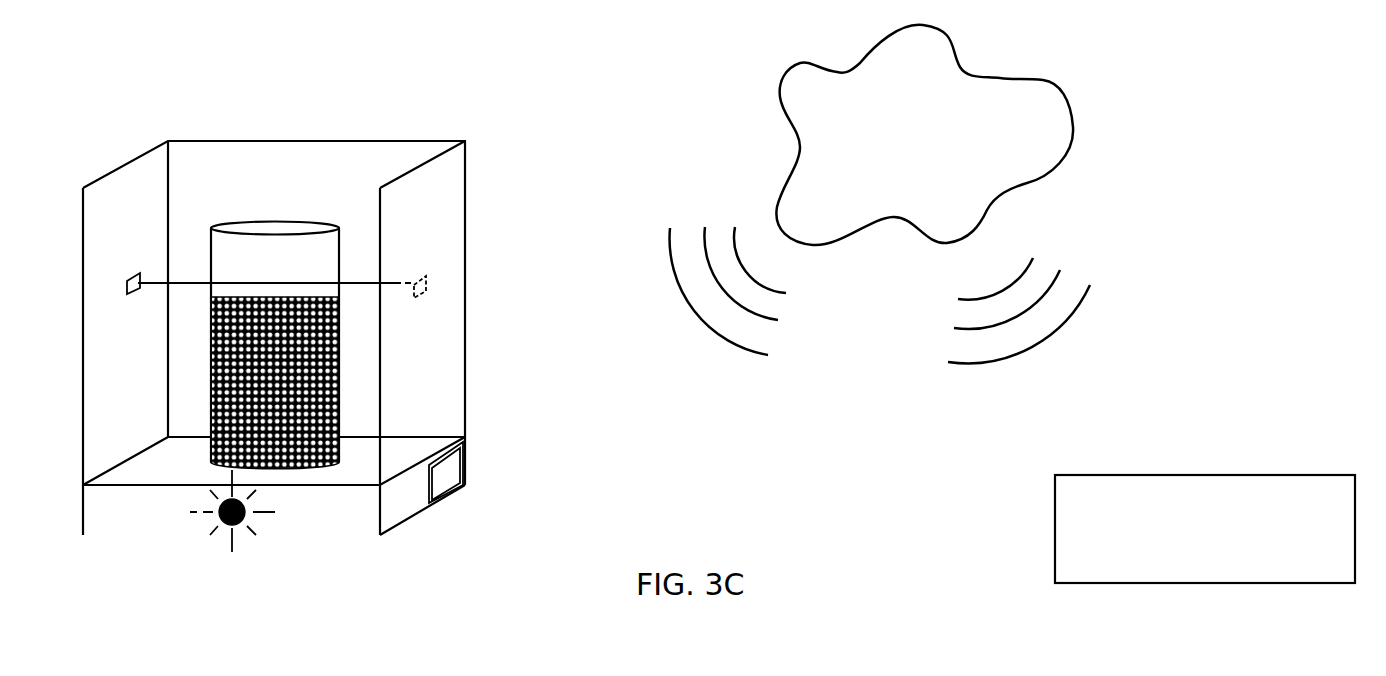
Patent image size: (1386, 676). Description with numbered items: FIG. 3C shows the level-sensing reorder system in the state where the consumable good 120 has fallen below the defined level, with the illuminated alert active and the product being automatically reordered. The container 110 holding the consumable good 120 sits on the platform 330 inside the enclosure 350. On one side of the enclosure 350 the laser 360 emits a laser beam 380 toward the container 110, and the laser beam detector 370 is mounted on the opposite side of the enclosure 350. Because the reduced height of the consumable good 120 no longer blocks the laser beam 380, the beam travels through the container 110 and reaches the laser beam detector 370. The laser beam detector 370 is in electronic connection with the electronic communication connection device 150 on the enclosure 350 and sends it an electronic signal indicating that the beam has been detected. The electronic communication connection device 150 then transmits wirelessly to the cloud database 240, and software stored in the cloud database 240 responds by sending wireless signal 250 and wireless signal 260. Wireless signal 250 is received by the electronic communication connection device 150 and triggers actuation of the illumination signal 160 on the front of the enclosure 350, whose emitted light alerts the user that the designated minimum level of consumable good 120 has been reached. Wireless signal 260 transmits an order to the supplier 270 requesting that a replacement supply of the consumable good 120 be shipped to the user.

The container 110 is at (280, 230).
The consumable good 120 is at (212, 392).
The electronic communication connection device 150 is at (449, 475).
The illumination signal 160 is at (225, 525).
The cloud database 240 is at (924, 135).
The wireless signal 250 is at (724, 335).
The wireless signal 260 is at (1068, 315).
The supplier 270 is at (1125, 475).
The platform 330 is at (361, 478).
The enclosure 350 is at (107, 190).
The laser 360 is at (135, 292).
The laser beam detector 370 is at (421, 282).
The laser beam 380 is at (180, 283).